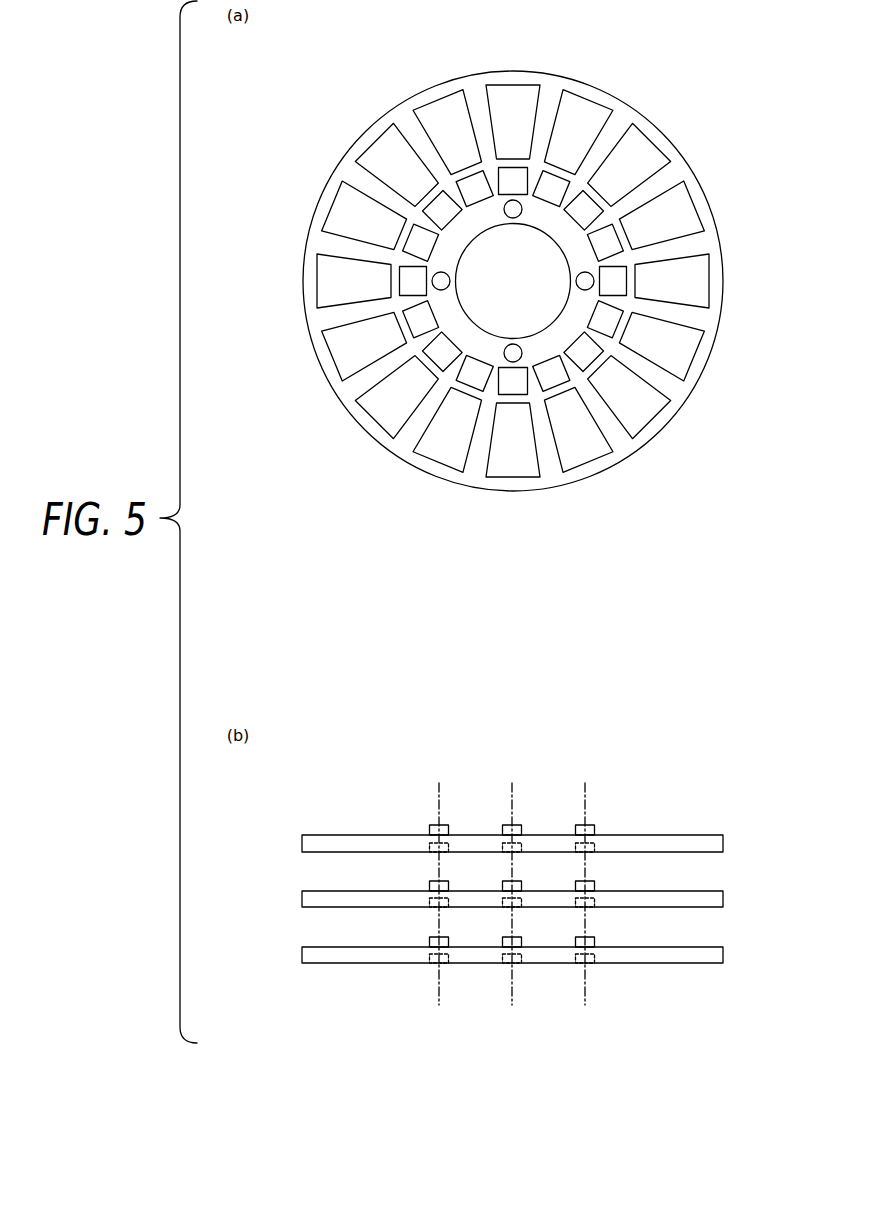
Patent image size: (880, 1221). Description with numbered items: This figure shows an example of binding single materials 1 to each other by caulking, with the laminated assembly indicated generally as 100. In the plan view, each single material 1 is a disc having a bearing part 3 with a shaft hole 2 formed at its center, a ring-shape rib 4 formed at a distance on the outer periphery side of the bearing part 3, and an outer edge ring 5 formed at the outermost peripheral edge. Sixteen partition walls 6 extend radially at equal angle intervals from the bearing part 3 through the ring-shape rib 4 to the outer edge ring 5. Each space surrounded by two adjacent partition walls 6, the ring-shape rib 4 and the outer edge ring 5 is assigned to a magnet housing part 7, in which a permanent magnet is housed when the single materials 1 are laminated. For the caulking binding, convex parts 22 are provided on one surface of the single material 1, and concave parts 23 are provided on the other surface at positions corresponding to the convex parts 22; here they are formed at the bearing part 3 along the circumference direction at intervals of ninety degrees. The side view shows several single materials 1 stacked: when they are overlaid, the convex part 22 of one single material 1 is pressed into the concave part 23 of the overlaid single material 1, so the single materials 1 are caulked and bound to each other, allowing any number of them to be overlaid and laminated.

The laminated stator core 100 is at (690, 475).
The single material 1 is at (361, 131).
The shaft hole 2 is at (495, 301).
The bearing part 3 is at (541, 215).
The ring-shape rib 4 is at (595, 197).
The outer edge ring 5 is at (703, 207).
The partition wall 6 is at (652, 375).
The magnet housing part 7 is at (451, 127).
The convex part 22 is at (410, 280).
The concave part 23 is at (432, 847).